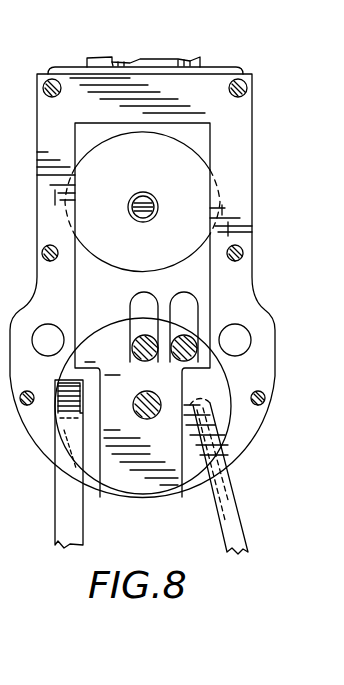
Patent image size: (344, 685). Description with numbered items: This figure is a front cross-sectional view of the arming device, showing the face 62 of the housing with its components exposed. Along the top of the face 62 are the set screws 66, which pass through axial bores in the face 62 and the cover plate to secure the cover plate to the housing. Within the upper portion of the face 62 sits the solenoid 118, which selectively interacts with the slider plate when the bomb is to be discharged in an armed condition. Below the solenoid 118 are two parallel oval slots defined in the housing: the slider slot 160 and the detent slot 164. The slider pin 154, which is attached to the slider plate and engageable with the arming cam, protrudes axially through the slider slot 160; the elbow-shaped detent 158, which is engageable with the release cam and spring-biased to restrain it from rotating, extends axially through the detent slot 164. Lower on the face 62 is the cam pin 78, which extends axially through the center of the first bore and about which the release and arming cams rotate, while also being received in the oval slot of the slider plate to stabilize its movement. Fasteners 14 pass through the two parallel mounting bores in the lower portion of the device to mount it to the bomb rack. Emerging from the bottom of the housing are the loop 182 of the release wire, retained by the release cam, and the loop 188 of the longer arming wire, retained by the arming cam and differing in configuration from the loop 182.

The fasteners 14 is at (232, 325).
The face of the housing 62 is at (235, 124).
The set screws 66 is at (247, 84).
The cam pin 78 is at (150, 416).
The solenoid 118 is at (203, 147).
The slider pin 154 is at (140, 360).
The detent 158 is at (186, 360).
The slider slot 160 is at (140, 303).
The detent slot 164 is at (184, 304).
The loop 182 is at (58, 522).
The loop 188 is at (256, 488).